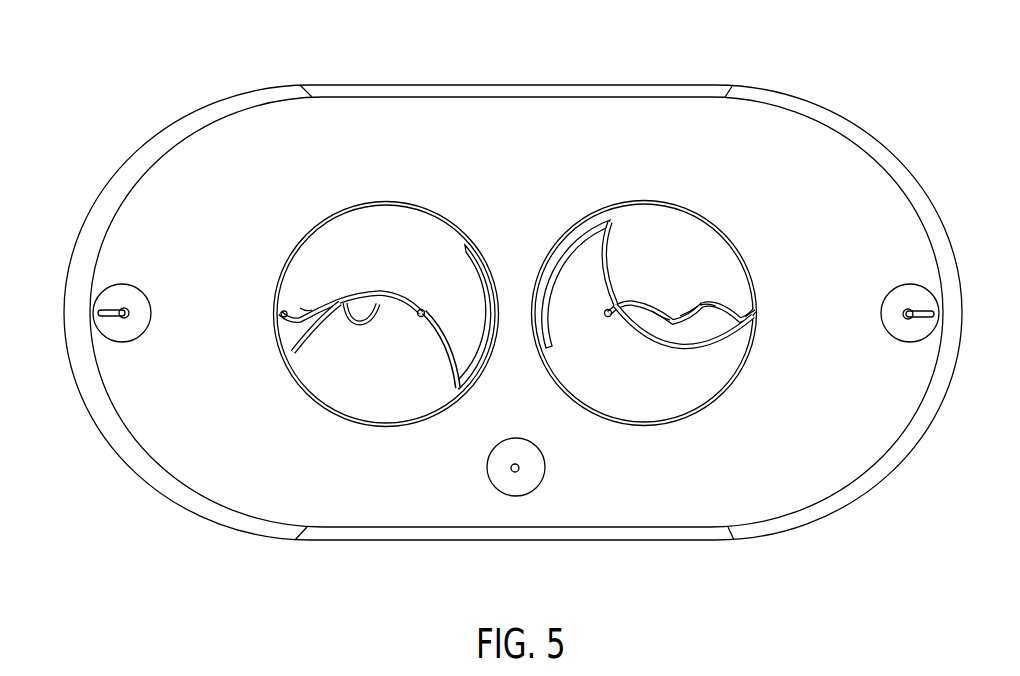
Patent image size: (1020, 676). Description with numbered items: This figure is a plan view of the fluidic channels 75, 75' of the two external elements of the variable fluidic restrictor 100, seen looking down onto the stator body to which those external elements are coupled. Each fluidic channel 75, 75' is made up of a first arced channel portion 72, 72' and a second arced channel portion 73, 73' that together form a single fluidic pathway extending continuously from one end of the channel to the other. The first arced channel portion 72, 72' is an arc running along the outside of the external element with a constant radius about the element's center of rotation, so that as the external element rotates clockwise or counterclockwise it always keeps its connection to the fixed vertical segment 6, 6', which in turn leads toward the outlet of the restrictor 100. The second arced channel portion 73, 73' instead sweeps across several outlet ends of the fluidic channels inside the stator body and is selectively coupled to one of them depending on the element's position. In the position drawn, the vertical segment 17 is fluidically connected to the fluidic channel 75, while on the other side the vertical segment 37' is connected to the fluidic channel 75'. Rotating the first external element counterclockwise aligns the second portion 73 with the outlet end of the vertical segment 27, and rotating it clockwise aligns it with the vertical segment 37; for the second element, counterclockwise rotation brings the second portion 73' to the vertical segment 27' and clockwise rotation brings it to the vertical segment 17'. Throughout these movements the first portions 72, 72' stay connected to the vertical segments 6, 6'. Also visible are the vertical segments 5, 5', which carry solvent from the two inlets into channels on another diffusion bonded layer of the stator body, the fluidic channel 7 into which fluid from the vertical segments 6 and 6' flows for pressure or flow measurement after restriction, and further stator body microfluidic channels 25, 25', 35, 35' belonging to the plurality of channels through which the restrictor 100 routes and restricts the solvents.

The variable fluidic restrictor 100 is at (92, 78).
The vertical segment 5 is at (132, 310).
The vertical segment 5' is at (909, 283).
The fluidic channel 7 is at (518, 471).
The vertical segment 6 is at (386, 314).
The vertical segment 6' is at (644, 313).
The first arced channel portion 72 is at (475, 292).
The first arced channel portion 72' is at (576, 284).
The second arced channel portion 73 is at (350, 276).
The second arced channel portion 73' is at (682, 391).
The fluidic channel 75 is at (424, 396).
The fluidic channel 75' is at (657, 238).
The vertical segment 17 is at (429, 286).
The vertical segment 17' is at (599, 357).
The fluidic channel 25 is at (336, 391).
The fluidic channel 25' is at (651, 355).
The vertical segment 27 is at (332, 391).
The vertical segment 27' is at (677, 282).
The fluidic channel 35 is at (290, 264).
The fluidic channel 35' is at (733, 252).
The vertical segment 37 is at (257, 300).
The vertical segment 37' is at (775, 300).